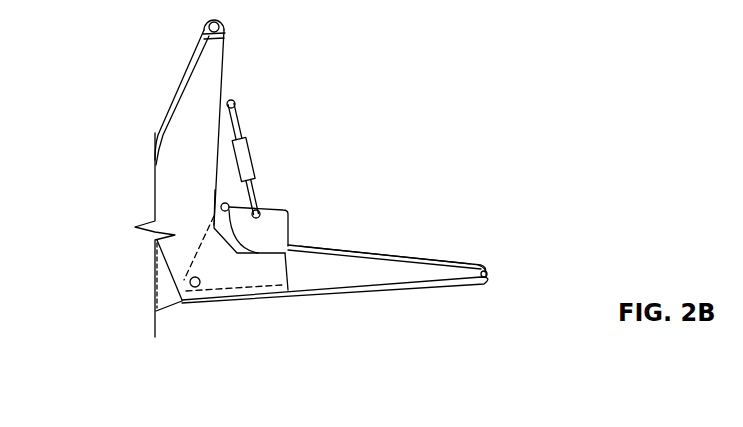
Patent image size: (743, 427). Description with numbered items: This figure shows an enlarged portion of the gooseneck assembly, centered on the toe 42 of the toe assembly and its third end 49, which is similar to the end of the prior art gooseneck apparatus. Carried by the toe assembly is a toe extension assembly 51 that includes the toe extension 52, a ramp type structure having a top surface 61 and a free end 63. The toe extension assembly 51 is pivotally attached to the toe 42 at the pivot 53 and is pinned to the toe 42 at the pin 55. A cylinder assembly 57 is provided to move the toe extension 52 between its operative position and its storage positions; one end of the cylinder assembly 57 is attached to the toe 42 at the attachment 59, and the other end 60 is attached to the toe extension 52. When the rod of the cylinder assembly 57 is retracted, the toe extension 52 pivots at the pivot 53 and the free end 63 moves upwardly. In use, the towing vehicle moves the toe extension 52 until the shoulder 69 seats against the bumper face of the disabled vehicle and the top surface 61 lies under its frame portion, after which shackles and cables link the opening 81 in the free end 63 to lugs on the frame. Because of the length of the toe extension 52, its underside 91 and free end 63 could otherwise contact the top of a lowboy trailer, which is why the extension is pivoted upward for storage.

The toe 42 is at (214, 57).
The third end 49 is at (276, 272).
The toe extension assembly 51 is at (366, 123).
The toe extension 52 is at (372, 262).
The pivotal attachment 53 is at (230, 205).
The pin 55 is at (197, 289).
The cylinder assembly 57 is at (257, 142).
The cylinder attachment to toe 59 is at (232, 100).
The other end of cylinder assembly 60 is at (261, 212).
The top surface 61 is at (432, 258).
The free end 63 is at (490, 263).
The shoulder 69 is at (290, 232).
The opening 81 is at (489, 281).
The underside 91 is at (388, 288).